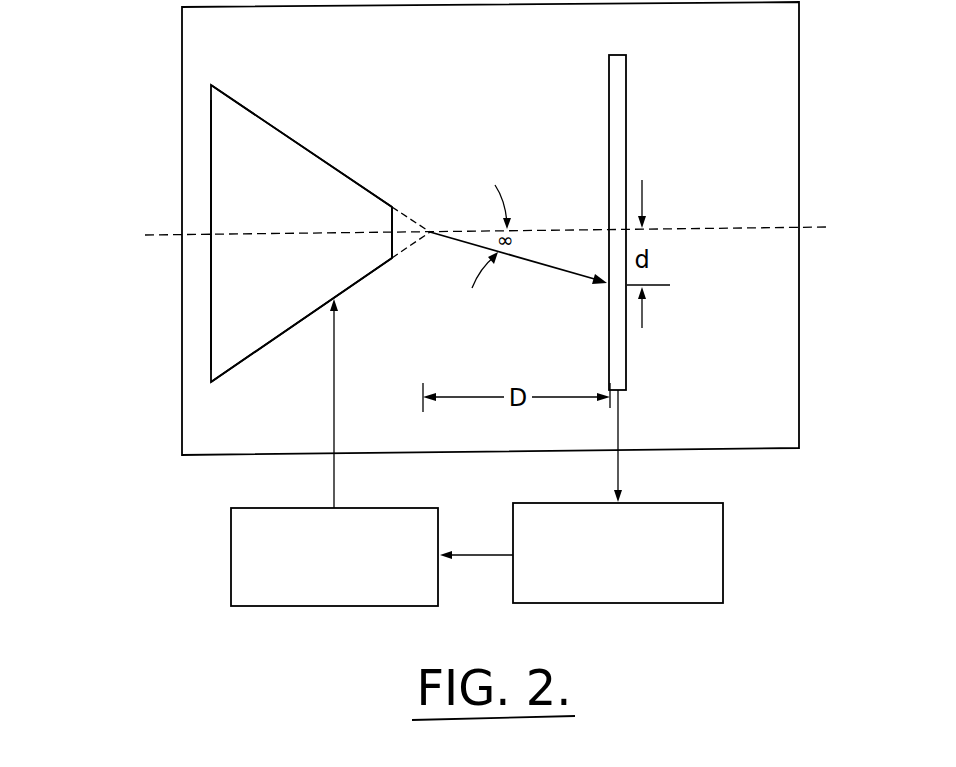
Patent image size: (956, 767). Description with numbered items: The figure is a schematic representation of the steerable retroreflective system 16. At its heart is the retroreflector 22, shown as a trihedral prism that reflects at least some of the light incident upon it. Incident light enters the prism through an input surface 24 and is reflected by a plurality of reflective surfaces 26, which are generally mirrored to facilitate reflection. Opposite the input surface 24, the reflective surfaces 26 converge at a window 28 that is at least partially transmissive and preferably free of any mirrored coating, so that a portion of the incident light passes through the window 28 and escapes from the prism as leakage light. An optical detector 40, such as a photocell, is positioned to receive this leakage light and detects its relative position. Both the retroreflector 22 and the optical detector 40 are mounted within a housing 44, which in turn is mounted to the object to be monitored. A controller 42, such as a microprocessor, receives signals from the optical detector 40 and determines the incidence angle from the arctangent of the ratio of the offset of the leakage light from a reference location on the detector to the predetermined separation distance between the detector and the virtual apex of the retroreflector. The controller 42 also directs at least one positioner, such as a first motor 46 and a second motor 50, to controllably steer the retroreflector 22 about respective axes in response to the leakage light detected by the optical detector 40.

The steerable retroreflective system 16 is at (150, 141).
The retroreflector 22 is at (253, 133).
The input surface 24 is at (166, 235).
The reflective surfaces 26 is at (318, 157).
The window 28 is at (390, 219).
The optical detector 40 is at (618, 83).
The controller 42 is at (618, 577).
The housing 44 is at (517, 228).
The first motor 46 is at (334, 582).
The second motor 50 is at (334, 557).